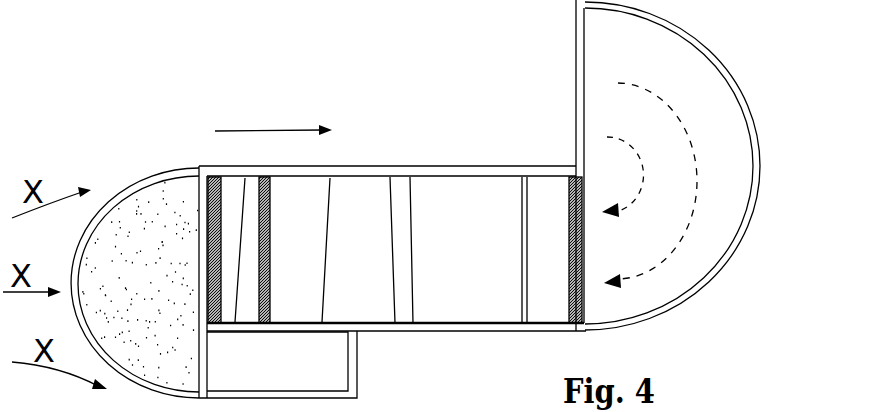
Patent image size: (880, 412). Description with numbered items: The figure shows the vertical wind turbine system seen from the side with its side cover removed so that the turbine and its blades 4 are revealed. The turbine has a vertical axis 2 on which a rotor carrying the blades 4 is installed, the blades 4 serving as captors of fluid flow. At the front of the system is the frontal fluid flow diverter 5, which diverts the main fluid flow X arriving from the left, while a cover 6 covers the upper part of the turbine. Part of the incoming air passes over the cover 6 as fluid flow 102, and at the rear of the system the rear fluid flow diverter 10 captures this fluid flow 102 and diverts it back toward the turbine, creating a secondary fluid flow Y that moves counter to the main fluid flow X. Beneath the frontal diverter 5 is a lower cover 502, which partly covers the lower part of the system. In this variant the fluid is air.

The frontal fluid flow diverter 5 is at (172, 190).
The fluid flow running above the cover 102 is at (273, 115).
The cover 6 is at (375, 165).
The vertical axis 2 is at (396, 188).
The blades 4 is at (487, 172).
The rear fluid flow diverter 10 is at (608, 72).
The lower cover 502 is at (330, 367).